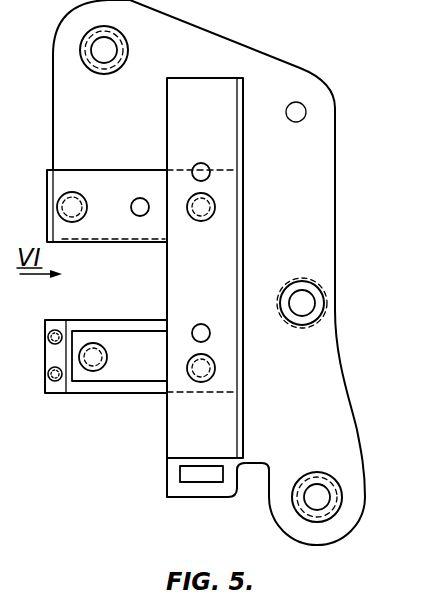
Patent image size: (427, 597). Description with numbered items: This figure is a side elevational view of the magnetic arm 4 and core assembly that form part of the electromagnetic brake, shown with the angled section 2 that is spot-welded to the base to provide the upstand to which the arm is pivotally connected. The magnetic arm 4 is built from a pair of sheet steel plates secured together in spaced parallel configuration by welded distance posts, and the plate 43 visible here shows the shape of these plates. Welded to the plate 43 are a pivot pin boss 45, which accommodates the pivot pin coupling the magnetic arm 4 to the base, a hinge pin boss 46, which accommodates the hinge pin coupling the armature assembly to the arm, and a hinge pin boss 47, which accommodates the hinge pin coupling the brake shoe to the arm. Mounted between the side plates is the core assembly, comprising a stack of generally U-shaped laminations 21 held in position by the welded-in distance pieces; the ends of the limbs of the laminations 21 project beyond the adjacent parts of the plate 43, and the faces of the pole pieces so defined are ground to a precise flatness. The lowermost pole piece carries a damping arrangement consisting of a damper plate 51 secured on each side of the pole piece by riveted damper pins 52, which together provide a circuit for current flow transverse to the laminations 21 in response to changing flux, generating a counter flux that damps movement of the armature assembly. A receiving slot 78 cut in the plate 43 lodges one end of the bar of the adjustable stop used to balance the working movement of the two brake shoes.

The angled section 2 is at (239, 272).
The magnetic arm 4 is at (344, 321).
The U-shaped laminations 21 is at (112, 245).
The plate 43 is at (57, 228).
The pivot pin boss 45 is at (340, 503).
The hinge pin boss 46 is at (128, 55).
The hinge pin boss 47 is at (319, 297).
The damper plate 51 is at (60, 352).
The damper pin 52 is at (55, 330).
The receiving slot 78 is at (193, 474).